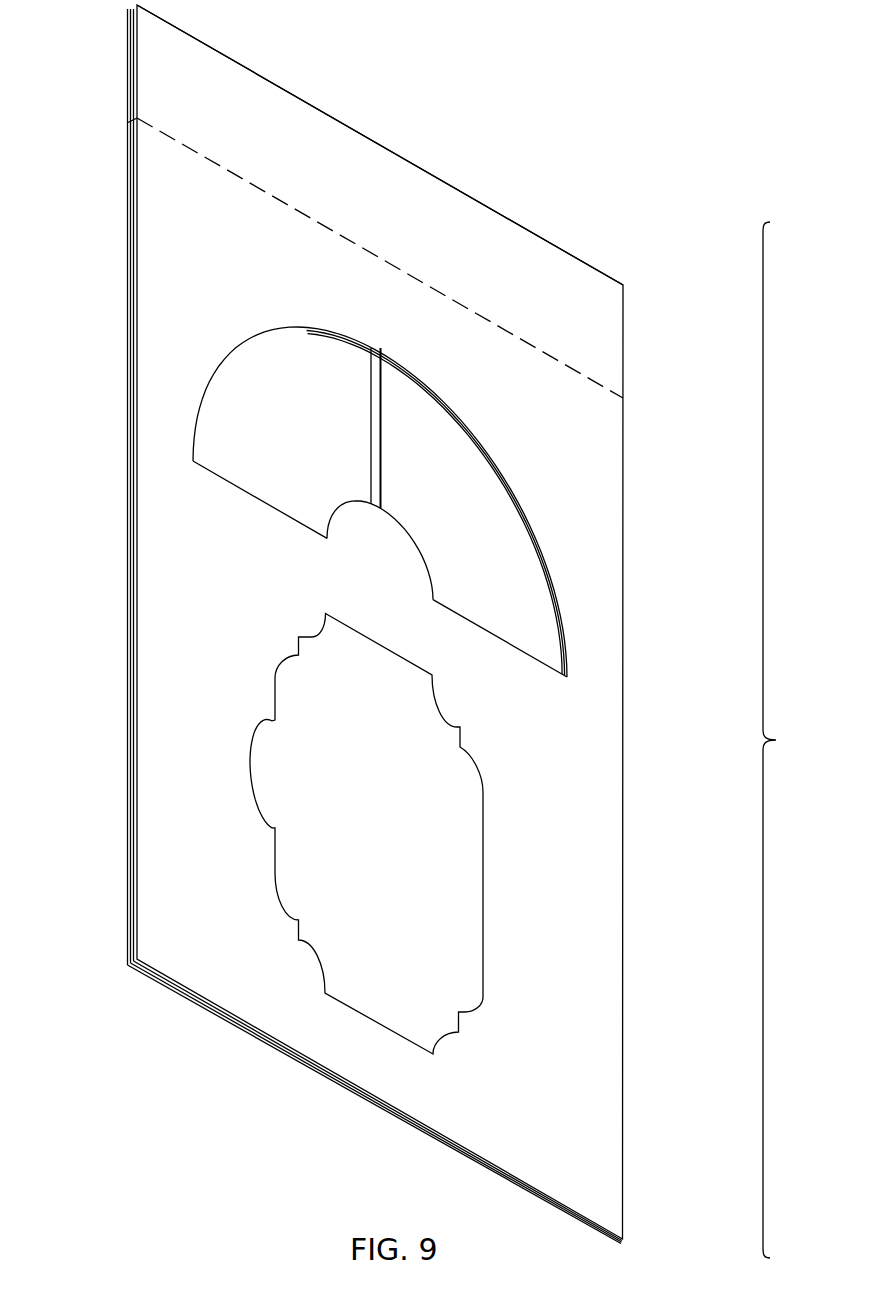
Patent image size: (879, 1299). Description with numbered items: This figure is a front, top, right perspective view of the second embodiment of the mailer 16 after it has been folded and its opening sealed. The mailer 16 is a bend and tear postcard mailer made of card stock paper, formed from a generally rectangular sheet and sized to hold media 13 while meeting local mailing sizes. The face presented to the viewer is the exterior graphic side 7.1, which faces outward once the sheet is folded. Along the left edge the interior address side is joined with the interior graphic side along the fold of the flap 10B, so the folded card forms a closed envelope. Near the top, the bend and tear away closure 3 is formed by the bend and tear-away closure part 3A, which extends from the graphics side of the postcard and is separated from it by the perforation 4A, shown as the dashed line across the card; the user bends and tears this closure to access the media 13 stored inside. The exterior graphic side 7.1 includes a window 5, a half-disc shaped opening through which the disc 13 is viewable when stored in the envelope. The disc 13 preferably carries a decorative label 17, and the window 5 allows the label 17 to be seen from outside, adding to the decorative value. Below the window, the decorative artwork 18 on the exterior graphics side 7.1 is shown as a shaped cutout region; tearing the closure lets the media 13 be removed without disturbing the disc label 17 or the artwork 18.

The bend and tear away closure 3 is at (637, 289).
The bend and tear-away closure part 3A is at (464, 254).
The perforation 4A is at (578, 372).
The window 5 is at (258, 333).
The exterior graphic side 7.1 is at (196, 953).
The fold of flap 10B is at (130, 610).
The media 13 is at (555, 532).
The mailer 16 is at (791, 740).
The label 17 is at (321, 446).
The decorative artwork 18 is at (398, 766).